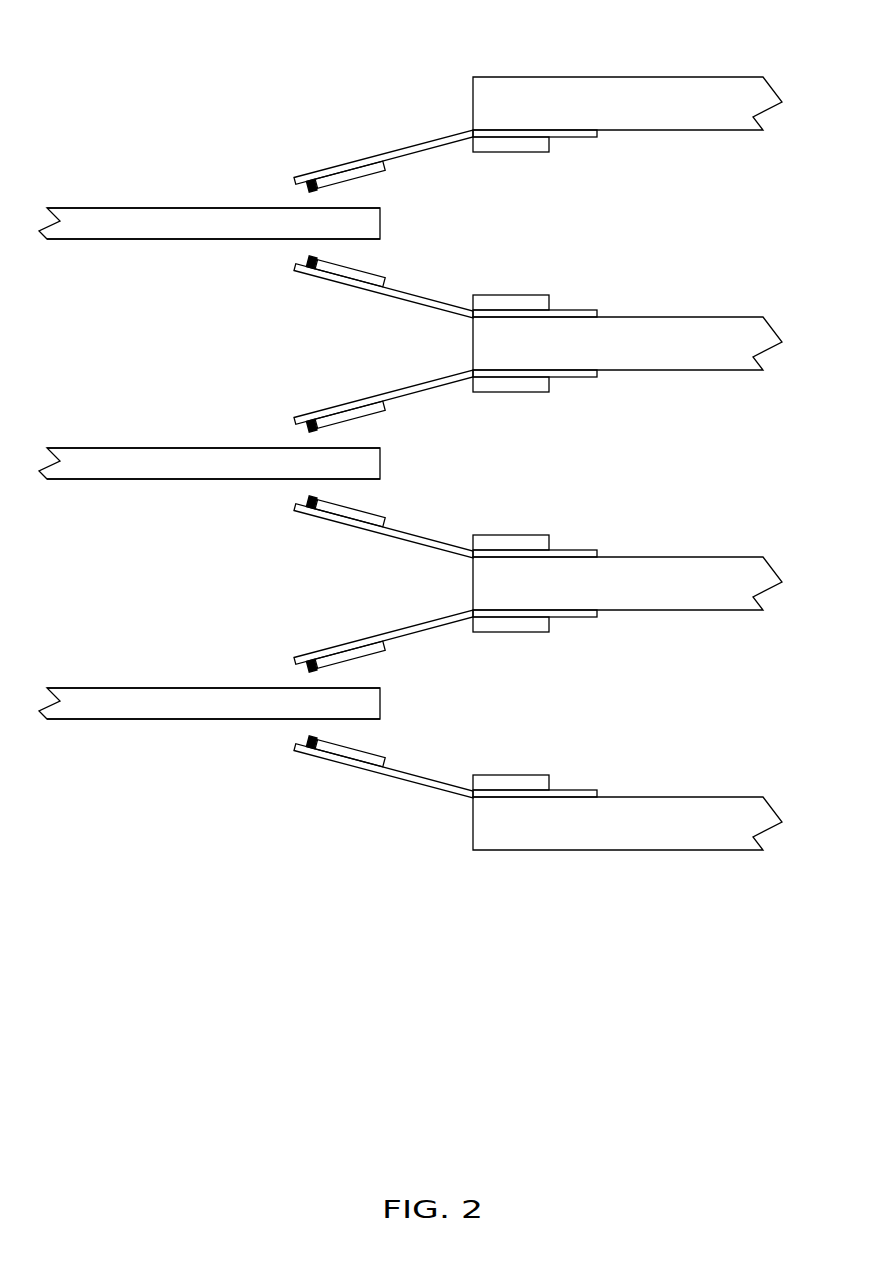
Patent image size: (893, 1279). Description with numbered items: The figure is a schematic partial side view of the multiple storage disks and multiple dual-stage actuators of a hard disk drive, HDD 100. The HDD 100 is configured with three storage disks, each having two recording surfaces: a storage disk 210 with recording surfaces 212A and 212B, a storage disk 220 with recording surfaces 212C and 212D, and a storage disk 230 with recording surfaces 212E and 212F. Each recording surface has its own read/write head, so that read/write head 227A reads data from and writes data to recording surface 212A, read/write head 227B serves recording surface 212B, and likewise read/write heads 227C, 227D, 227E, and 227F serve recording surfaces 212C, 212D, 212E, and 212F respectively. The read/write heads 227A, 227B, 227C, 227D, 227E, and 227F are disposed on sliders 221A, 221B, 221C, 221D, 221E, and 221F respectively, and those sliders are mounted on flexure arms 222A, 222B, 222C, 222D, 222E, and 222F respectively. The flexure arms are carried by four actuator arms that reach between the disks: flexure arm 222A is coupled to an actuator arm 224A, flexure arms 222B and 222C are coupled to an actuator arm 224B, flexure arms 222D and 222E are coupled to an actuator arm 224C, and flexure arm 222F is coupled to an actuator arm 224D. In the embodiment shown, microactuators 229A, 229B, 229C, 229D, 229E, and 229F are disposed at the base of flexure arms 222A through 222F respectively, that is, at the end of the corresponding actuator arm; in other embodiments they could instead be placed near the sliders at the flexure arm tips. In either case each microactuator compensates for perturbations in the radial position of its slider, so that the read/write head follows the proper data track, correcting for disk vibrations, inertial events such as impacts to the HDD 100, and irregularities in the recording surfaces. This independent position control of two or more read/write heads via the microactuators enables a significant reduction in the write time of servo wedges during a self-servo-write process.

The HDD 100 is at (133, 45).
The storage disk 210 is at (380, 224).
The storage disk 220 is at (380, 464).
The storage disk 230 is at (380, 704).
The recording surface 212A is at (163, 208).
The recording surface 212B is at (163, 239).
The recording surface 212C is at (163, 448).
The recording surface 212D is at (163, 479).
The recording surface 212E is at (163, 688).
The recording surface 212F is at (163, 719).
The slider 221A is at (368, 177).
The slider 221B is at (368, 271).
The slider 221C is at (368, 417).
The slider 221D is at (368, 511).
The slider 221E is at (368, 657).
The slider 221F is at (367, 752).
The flexure arm 222A is at (421, 143).
The flexure arm 222B is at (421, 305).
The flexure arm 222C is at (421, 383).
The flexure arm 222D is at (421, 545).
The flexure arm 222E is at (421, 623).
The flexure arm 222F is at (421, 785).
The actuator arm 224A is at (677, 114).
The actuator arm 224B is at (677, 357).
The actuator arm 224C is at (677, 597).
The actuator arm 224D is at (677, 837).
The read/write head 227A is at (306, 189).
The read/write head 227B is at (306, 259).
The read/write head 227C is at (306, 429).
The read/write head 227D is at (306, 499).
The read/write head 227E is at (306, 669).
The read/write head 227F is at (306, 739).
The microactuator 229A is at (530, 152).
The microactuator 229B is at (530, 295).
The microactuator 229C is at (530, 392).
The microactuator 229D is at (530, 535).
The microactuator 229E is at (530, 632).
The microactuator 229F is at (530, 775).